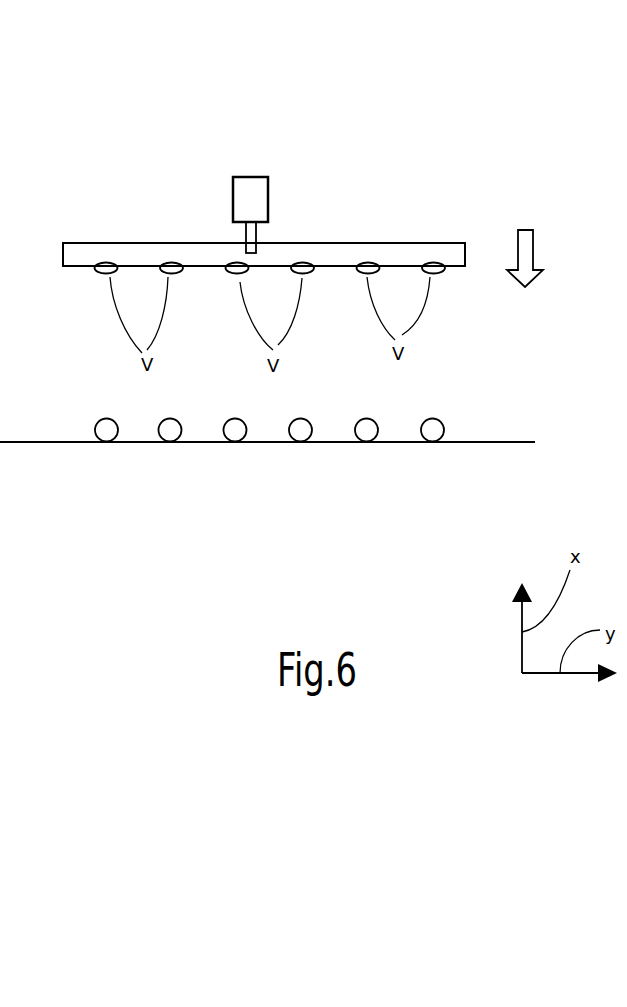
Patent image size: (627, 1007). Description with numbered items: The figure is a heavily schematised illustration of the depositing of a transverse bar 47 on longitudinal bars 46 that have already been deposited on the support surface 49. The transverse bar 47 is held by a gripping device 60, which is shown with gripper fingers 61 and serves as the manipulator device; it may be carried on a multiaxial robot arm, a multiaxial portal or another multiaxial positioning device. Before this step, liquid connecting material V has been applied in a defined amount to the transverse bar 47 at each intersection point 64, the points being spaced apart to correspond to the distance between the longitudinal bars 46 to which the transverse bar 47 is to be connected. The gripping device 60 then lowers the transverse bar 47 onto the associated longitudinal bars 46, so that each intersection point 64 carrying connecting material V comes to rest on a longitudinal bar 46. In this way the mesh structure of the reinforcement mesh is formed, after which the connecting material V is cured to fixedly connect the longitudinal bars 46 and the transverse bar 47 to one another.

The gripping device 60 is at (281, 166).
The gripper fingers 61 is at (253, 233).
The transverse bar 47 is at (412, 250).
The intersection point 64 is at (89, 272).
The support surface 49 is at (503, 442).
The longitudinal bars 46 is at (107, 442).